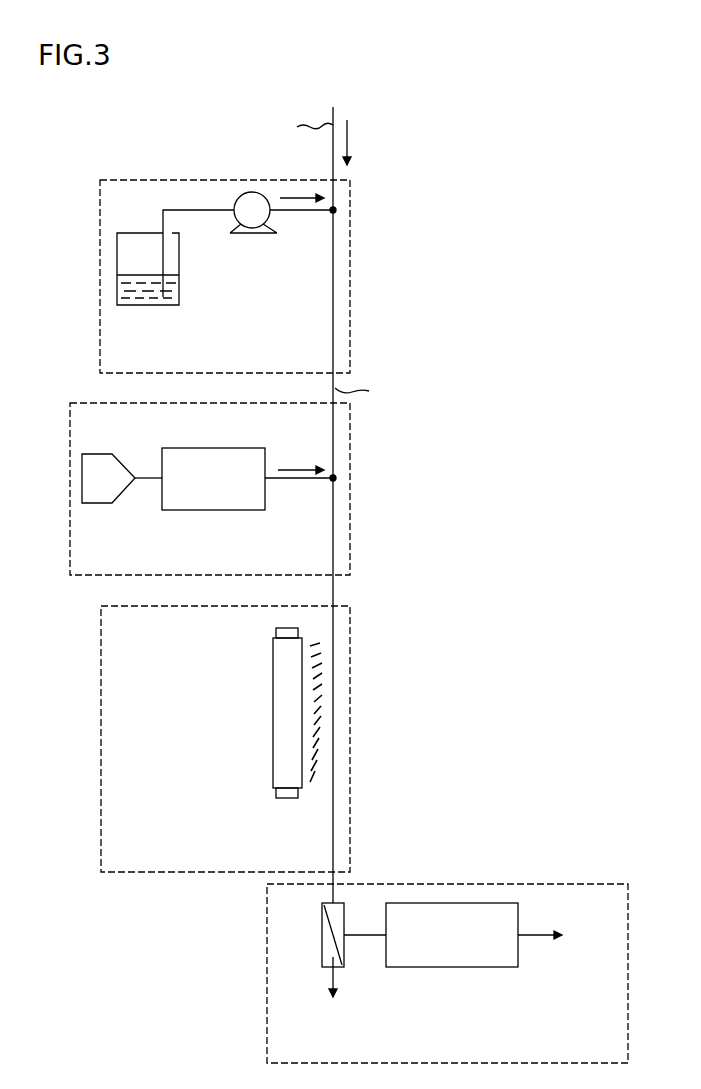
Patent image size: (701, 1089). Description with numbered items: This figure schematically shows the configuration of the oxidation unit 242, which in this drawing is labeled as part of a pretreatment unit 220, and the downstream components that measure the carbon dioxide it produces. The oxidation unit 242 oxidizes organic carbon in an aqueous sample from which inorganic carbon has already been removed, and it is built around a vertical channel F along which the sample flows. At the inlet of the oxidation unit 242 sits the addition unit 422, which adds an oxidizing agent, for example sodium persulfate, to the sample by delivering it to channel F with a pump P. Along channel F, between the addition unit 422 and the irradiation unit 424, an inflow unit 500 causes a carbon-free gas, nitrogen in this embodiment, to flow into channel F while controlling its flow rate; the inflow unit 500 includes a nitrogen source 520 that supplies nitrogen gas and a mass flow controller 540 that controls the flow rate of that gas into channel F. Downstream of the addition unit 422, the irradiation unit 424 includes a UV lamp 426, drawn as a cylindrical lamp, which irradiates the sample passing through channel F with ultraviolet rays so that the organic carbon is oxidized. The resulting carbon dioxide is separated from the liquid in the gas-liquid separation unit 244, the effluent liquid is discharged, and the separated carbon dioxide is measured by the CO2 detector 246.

The pretreatment unit 220 is at (333, 491).
The oxidation unit 242 is at (200, 146).
The addition unit 422 is at (243, 180).
The inflow unit 500 is at (227, 403).
The nitrogen source 520 is at (107, 454).
The mass flow controller 540 is at (232, 448).
The irradiation unit 424 is at (226, 606).
The UV lamp 426 is at (273, 680).
The gas-liquid separation unit 244 is at (343, 952).
The CO2 detector 246 is at (478, 967).